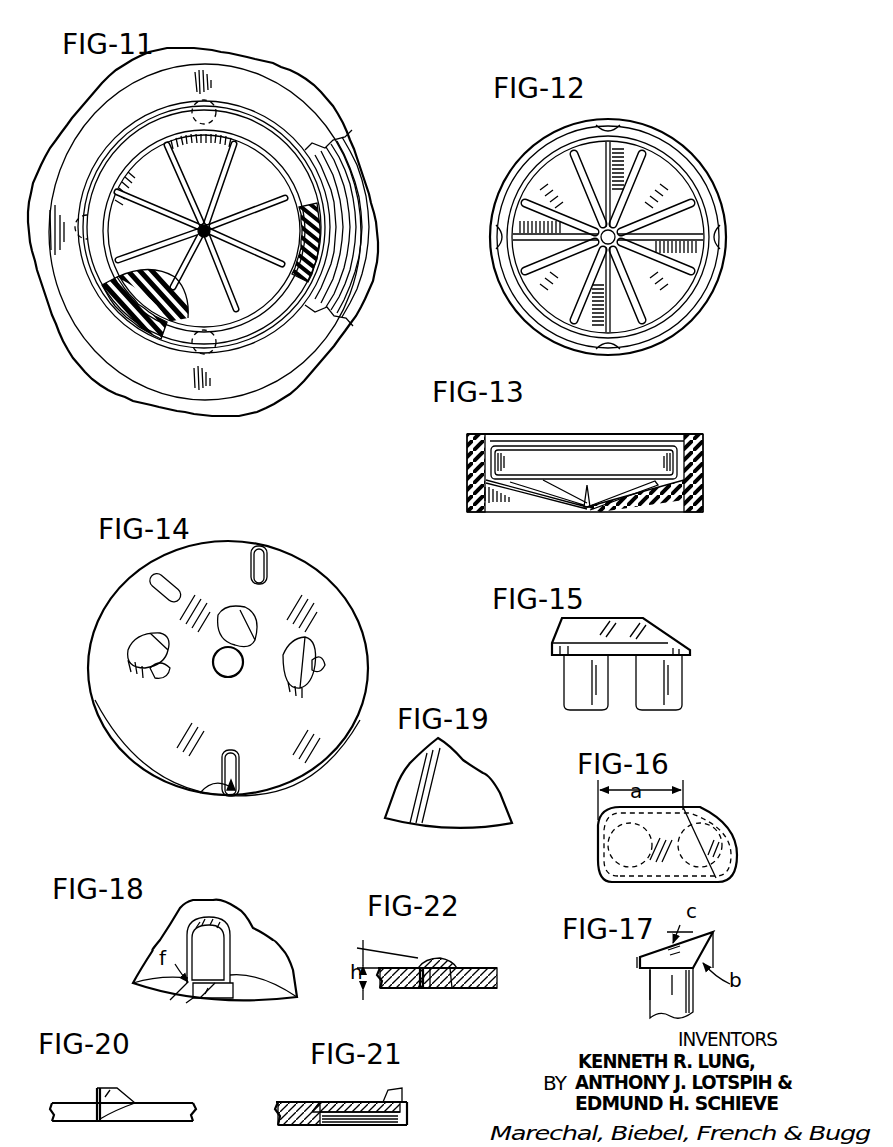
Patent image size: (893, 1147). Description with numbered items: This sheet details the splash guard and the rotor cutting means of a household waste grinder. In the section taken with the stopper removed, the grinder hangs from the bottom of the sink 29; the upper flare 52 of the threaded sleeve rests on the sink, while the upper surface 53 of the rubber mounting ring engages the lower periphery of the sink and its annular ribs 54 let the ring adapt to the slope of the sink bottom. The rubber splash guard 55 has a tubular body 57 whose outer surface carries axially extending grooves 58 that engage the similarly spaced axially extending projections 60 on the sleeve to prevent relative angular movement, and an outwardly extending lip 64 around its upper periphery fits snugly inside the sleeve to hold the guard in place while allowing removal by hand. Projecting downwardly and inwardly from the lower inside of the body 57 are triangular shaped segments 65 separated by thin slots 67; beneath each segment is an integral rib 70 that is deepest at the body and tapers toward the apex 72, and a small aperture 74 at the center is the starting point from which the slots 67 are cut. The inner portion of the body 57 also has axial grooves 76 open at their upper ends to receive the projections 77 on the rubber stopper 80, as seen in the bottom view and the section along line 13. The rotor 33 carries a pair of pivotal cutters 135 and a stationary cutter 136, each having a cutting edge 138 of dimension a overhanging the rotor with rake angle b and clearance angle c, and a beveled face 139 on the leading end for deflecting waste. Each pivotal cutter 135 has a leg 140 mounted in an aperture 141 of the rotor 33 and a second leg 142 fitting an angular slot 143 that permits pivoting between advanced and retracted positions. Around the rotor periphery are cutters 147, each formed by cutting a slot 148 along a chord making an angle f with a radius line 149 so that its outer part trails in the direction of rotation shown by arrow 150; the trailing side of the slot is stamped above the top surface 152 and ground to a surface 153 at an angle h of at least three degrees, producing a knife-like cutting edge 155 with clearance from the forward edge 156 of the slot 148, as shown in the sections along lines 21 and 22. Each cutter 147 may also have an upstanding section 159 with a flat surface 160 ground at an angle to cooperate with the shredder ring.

In FIG. 11, the sink 29 is at (97, 367).
In FIG. 14, the rotor 33 is at (317, 572).
In FIG. 19, the rotor 33 is at (497, 803).
In FIG. 22, the rotor 33 is at (497, 975).
In FIG. 20, the rotor 33 is at (180, 1107).
In FIG. 11, the upper flare 52 is at (177, 372).
In FIG. 11, the upper surface 53 is at (370, 292).
In FIG. 11, the annular ribs 54 is at (348, 198).
In FIG. 11, the splash guard 55 is at (282, 262).
In FIG. 12, the splash guard 55 is at (513, 162).
In FIG. 13, the splash guard 55 is at (465, 463).
In FIG. 13, the tubular body 57 is at (702, 465).
In FIG. 11, the axially extending grooves 58 is at (298, 226).
In FIG. 12, the axially extending grooves 58 is at (608, 122).
In FIG. 13, the axially extending grooves 58 is at (702, 488).
In FIG. 11, the axially extending projections 60 is at (310, 223).
In FIG. 12, the outwardly extending lip 64 is at (703, 163).
In FIG. 13, the outwardly extending lip 64 is at (466, 436).
In FIG. 11, the triangular shaped segments 65 is at (157, 172).
In FIG. 12, the triangular shaped segments 65 is at (557, 160).
In FIG. 13, the triangular shaped segments 65 is at (582, 510).
In FIG. 11, the slots 67 is at (226, 158).
In FIG. 12, the slots 67 is at (532, 200).
In FIG. 13, the slots 67 is at (546, 482).
In FIG. 12, the integral rib 70 is at (540, 173).
In FIG. 13, the integral rib 70 is at (500, 497).
In FIG. 11, the apex 72 is at (205, 244).
In FIG. 13, the apex 72 is at (590, 505).
In FIG. 11, the small aperture 74 is at (189, 207).
In FIG. 13, the small aperture 74 is at (587, 512).
In FIG. 11, the axial grooves 76 is at (253, 157).
In FIG. 13, the axial grooves 76 is at (501, 458).
In FIG. 11, the projections 77 is at (123, 304).
In FIG. 11, the rubber stopper 80 is at (165, 312).
In FIG. 12, the section line 13 is at (767, 265).
In FIG. 18, the section line 21 is at (158, 1037).
In FIG. 18, the section line 22 is at (103, 928).
In FIG. 14, the pivotal cutters 135 is at (133, 637).
In FIG. 15, the pivotal cutters 135 is at (647, 615).
In FIG. 14, the stationary cutter 136 is at (230, 603).
In FIG. 15, the stationary cutter 136 is at (666, 580).
In FIG. 15, the cutting edge 138 is at (613, 615).
In FIG. 16, the cutting edge 138 is at (615, 808).
In FIG. 17, the cutting edge 138 is at (712, 931).
In FIG. 15, the beveled face 139 is at (665, 637).
In FIG. 16, the beveled face 139 is at (733, 837).
In FIG. 17, the beveled face 139 is at (660, 969).
In FIG. 16, the leg 140 is at (735, 864).
In FIG. 17, the leg 140 is at (692, 993).
In FIG. 15, the aperture 141 is at (657, 703).
In FIG. 15, the leg 142 is at (583, 708).
In FIG. 16, the leg 142 is at (605, 860).
In FIG. 14, the angular slot 143 is at (317, 663).
In FIG. 14, the peripheral cutters 147 is at (252, 543).
In FIG. 18, the peripheral cutters 147 is at (230, 943).
In FIG. 20, the peripheral cutters 147 is at (92, 1090).
In FIG. 19, the slot 148 is at (433, 827).
In FIG. 18, the slot 148 is at (187, 943).
In FIG. 22, the slot 148 is at (425, 987).
In FIG. 18, the radius line 149 is at (170, 1009).
In FIG. 18, the arrow 150 is at (250, 963).
In FIG. 20, the top surface 152 is at (65, 1103).
In FIG. 18, the surface 153 is at (220, 915).
In FIG. 22, the surface 153 is at (450, 967).
In FIG. 21, the surface 153 is at (345, 1098).
In FIG. 14, the cutting edge 155 is at (217, 777).
In FIG. 22, the forward edge 156 is at (420, 977).
In FIG. 18, the upstanding section 159 is at (213, 998).
In FIG. 22, the upstanding section 159 is at (423, 970).
In FIG. 21, the upstanding section 159 is at (389, 1095).
In FIG. 14, the flat surface 160 is at (237, 797).
In FIG. 20, the flat surface 160 is at (110, 1093).
In FIG. 21, the flat surface 160 is at (396, 1107).